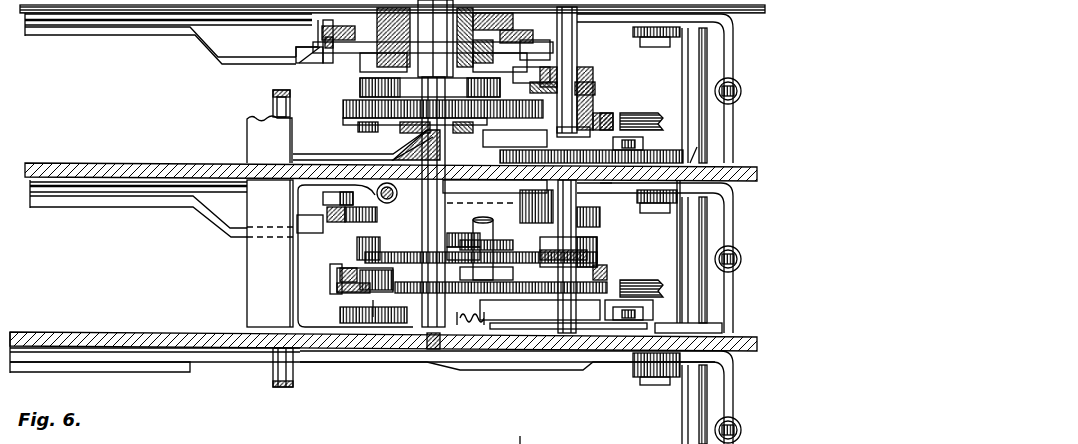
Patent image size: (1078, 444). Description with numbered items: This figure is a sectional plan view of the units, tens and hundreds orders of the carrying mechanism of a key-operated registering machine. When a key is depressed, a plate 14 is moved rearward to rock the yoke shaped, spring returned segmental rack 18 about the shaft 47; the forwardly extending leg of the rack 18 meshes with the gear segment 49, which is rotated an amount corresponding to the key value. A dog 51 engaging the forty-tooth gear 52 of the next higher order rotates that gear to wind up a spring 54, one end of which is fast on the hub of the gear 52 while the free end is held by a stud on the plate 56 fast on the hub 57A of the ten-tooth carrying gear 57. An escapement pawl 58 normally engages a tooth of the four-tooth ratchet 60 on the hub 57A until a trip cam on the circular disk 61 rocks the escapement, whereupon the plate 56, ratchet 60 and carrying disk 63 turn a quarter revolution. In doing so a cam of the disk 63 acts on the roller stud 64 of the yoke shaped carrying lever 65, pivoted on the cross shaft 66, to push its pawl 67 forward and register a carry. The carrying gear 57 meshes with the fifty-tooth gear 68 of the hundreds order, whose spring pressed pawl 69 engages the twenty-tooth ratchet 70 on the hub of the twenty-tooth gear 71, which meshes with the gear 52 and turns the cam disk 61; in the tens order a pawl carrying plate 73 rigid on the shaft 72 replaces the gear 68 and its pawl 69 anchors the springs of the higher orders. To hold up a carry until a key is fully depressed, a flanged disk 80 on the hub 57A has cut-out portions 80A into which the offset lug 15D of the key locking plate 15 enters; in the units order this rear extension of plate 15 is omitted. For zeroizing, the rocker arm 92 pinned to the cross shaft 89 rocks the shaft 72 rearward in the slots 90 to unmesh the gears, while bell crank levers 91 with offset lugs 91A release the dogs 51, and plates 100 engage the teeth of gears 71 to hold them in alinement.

The plate 14 is at (80, 20).
The key locking plate 15 is at (133, 30).
The offset lug 15D is at (300, 53).
The segmental rack 18 is at (730, 67).
The shaft 47 is at (688, 313).
The gear segment 49 is at (395, 127).
The dog 51 is at (343, 290).
The forty-tooth gear 52 is at (387, 390).
The spring 54 is at (352, 106).
The plate 56 is at (352, 238).
The carrying gear 57 is at (374, 122).
The hub 57A is at (487, 73).
The escapement pawl 58 is at (413, 187).
The ratchet 60 is at (515, 22).
The circular disk 61 is at (350, 120).
The carrying disk 63 is at (358, 42).
The roller stud 64 is at (322, 64).
The carrying lever 65 is at (288, 67).
The cross shaft 66 is at (272, 103).
The pawl 67 is at (353, 317).
The fifty-tooth gear 68 is at (700, 148).
The spring pressed pawl 69 is at (517, 373).
The ratchet 70 is at (637, 138).
The twenty-tooth gear 71 is at (613, 120).
The shaft 72 is at (560, 200).
The pawl carrying plate 73 is at (550, 327).
The disk 80 is at (367, 86).
The cut-out portions 80A is at (357, 104).
The cross shaft 89 is at (427, 370).
The slots 90 is at (612, 180).
The bell crank levers 91 is at (593, 88).
The offset lugs 91A is at (373, 317).
The rocker arm 92 is at (518, 437).
The plates 100 is at (650, 112).